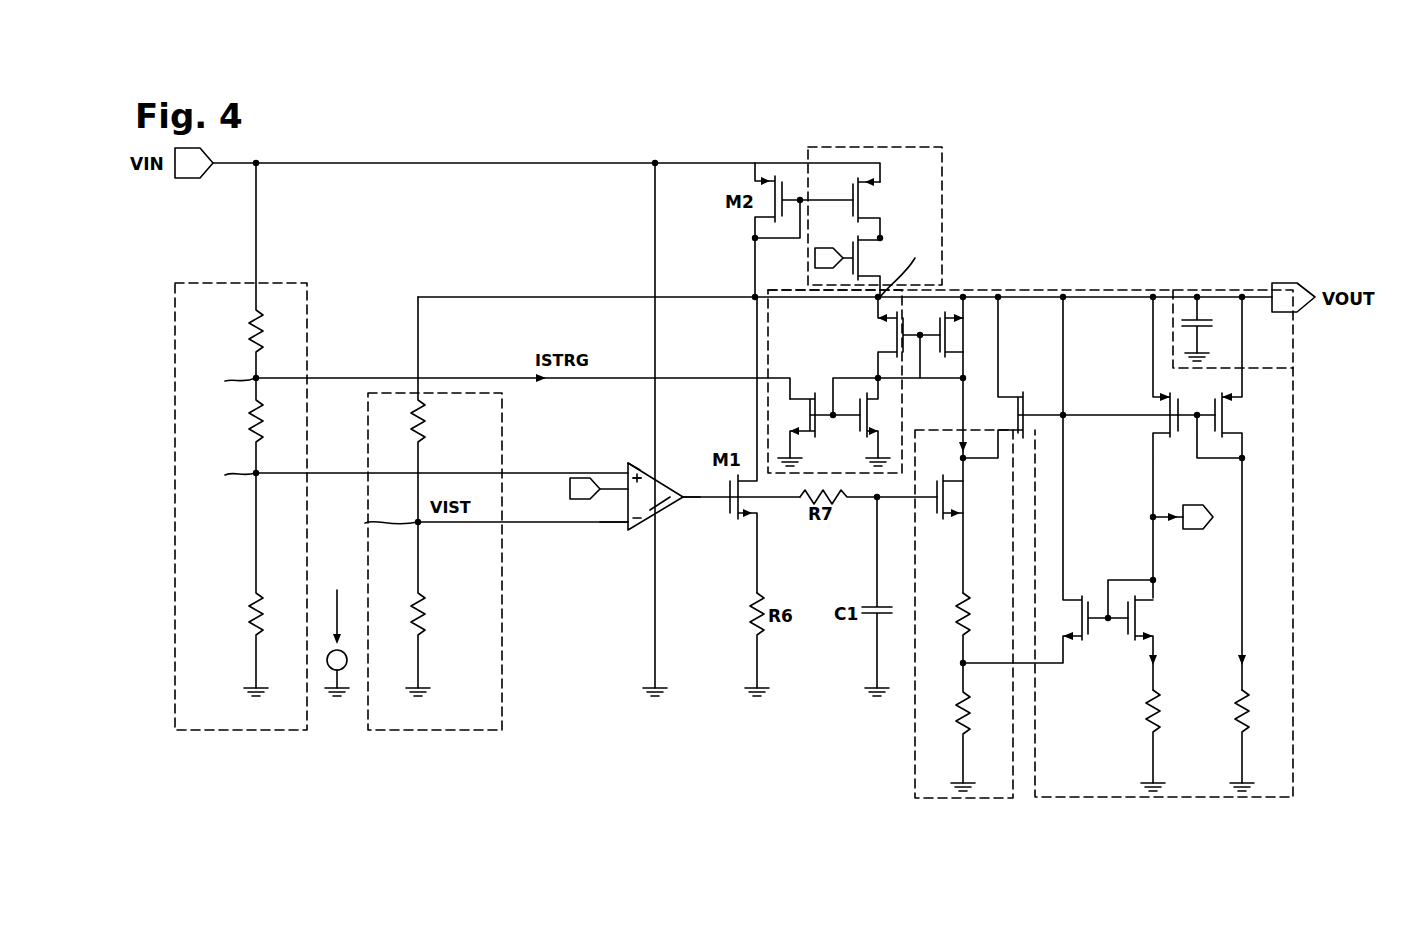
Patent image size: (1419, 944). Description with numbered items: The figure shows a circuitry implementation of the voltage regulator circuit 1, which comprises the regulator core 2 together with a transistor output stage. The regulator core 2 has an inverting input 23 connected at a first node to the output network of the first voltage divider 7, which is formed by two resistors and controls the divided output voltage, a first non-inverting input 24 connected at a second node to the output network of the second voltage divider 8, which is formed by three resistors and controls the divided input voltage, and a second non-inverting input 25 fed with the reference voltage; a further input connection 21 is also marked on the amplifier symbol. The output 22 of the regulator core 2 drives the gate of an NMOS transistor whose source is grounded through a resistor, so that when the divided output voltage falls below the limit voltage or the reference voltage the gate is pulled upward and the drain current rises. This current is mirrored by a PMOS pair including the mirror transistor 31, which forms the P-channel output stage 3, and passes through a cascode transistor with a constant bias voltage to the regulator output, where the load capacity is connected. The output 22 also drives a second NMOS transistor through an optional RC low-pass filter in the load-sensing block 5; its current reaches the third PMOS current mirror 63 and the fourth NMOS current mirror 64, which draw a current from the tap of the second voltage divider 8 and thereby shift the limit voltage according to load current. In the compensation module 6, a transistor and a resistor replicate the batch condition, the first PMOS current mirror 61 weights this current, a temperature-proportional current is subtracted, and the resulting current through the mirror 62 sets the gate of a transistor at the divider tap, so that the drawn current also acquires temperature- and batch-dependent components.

The voltage regulator circuit 1 is at (266, 744).
The regulator core 2 is at (656, 502).
The P-channel output stage 3 is at (901, 222).
The current-sensing and load-dependent stage 5 is at (895, 760).
The batch- and temperature-compensation module 6 is at (1070, 532).
The first voltage divider 7 is at (520, 715).
The second voltage divider 8 is at (325, 716).
The regulator core input 21 is at (668, 505).
The output 22 is at (690, 500).
The inverting input INN 23 is at (628, 522).
The first non-inverting input INP1 24 is at (630, 463).
The second non-inverting input INP2 25 is at (640, 498).
The mirror transistor 31 is at (953, 207).
The first PMOS current mirror 61 is at (1093, 396).
The second current mirror 62 is at (1097, 600).
The third PMOS current mirror 63 is at (903, 360).
The fourth NMOS current mirror 64 is at (876, 381).